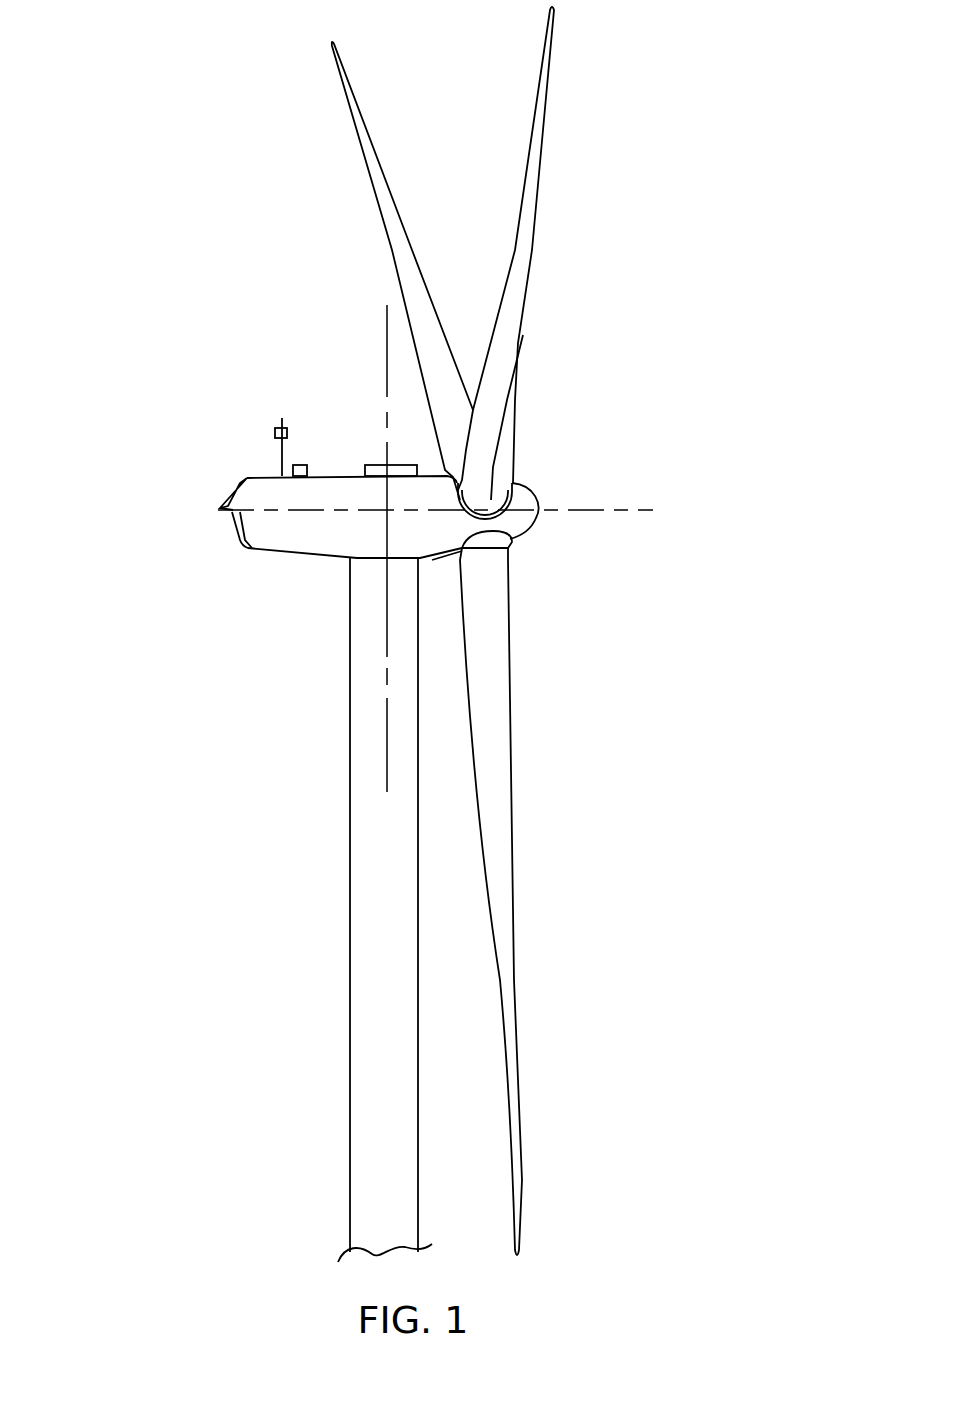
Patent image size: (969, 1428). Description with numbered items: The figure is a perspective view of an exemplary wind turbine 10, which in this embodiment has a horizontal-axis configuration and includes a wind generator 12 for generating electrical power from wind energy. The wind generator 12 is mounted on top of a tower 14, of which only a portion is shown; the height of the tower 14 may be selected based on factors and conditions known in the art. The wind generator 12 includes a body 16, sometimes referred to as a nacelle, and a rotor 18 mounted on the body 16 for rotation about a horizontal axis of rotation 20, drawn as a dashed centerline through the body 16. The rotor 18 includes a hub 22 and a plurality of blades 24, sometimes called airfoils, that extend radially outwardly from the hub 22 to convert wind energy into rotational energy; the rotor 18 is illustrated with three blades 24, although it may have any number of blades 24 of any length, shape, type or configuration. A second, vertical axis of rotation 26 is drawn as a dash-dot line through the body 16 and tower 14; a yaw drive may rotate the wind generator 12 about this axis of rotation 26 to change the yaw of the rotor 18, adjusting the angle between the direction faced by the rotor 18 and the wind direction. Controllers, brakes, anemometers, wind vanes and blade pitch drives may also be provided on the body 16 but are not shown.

The wind turbine 10 is at (186, 270).
The wind generator 12 is at (352, 425).
The tower 14 is at (348, 853).
The body 16 is at (297, 555).
The rotor 18 is at (614, 297).
The axis of rotation 20 is at (633, 510).
The hub 22 is at (530, 523).
The blades 24 is at (370, 130).
The axis of rotation 26 is at (383, 323).